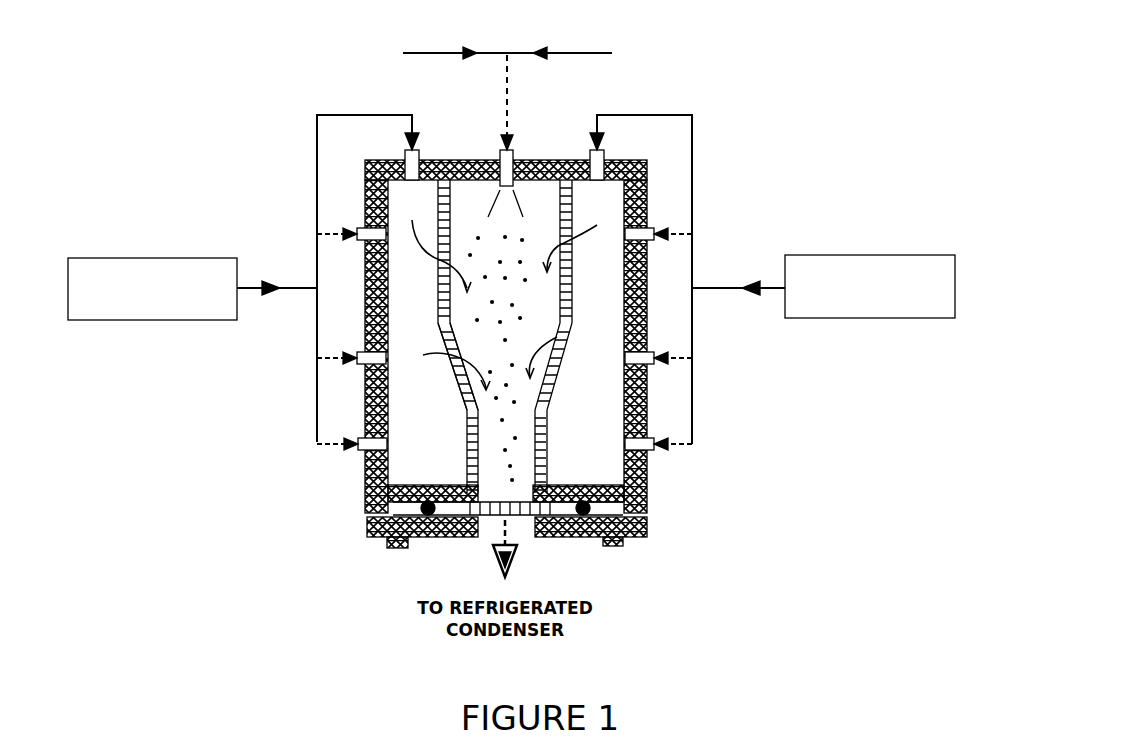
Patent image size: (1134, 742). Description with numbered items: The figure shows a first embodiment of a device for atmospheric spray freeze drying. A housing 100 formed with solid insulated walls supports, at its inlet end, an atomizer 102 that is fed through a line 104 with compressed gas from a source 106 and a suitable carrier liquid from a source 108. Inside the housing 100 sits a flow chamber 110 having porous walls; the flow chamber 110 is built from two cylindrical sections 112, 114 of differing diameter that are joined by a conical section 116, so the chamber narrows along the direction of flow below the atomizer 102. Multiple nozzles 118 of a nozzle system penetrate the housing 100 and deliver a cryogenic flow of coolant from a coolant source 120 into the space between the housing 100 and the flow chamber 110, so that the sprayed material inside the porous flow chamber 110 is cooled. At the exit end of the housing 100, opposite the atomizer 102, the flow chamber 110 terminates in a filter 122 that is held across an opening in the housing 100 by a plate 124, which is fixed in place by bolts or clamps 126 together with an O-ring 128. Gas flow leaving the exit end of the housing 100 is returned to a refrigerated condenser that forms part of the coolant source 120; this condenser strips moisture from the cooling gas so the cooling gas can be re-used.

The housing 100 is at (647, 462).
The atomizer 102 is at (490, 205).
The line 104 is at (511, 93).
The source of compressed gas 106 is at (440, 53).
The source of carrier liquid 108 is at (567, 53).
The flow chamber 110 is at (462, 392).
The cylindrical section 112 is at (573, 268).
The cylindrical section 114 is at (548, 440).
The conical section 116 is at (560, 362).
The nozzles 118 is at (604, 160).
The coolant source 120 is at (182, 320).
The filter 122 is at (450, 537).
The plate 124 is at (367, 535).
The bolts or clamps 126 is at (623, 541).
The O-ring 128 is at (587, 546).